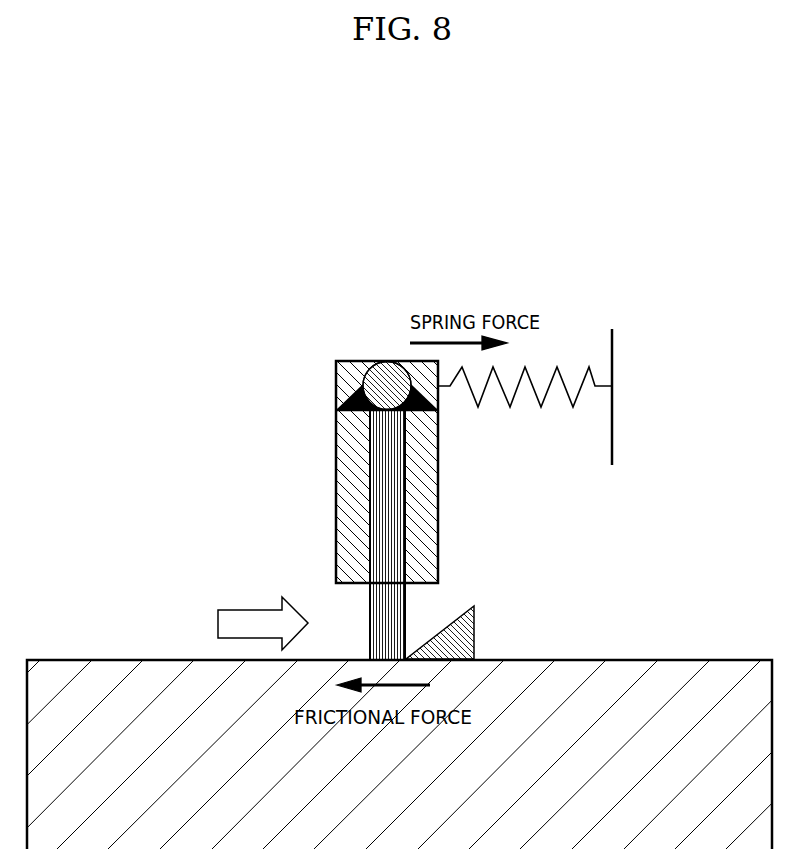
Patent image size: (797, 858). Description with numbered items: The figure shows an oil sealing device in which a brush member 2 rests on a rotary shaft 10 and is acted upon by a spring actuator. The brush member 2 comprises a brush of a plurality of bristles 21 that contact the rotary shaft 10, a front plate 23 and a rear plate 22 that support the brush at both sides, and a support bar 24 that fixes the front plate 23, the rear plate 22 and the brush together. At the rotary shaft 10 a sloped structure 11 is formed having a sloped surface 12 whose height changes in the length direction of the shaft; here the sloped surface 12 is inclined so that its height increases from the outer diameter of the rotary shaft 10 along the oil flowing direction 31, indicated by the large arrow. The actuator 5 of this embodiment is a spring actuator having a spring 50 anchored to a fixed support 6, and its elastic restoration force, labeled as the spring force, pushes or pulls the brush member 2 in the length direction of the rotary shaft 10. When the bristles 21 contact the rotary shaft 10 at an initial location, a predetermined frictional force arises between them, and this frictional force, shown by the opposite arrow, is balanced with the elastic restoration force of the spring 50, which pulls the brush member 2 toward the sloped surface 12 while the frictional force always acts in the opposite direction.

The brush member 2 is at (386, 446).
The actuator 5 is at (525, 392).
The fixed wall 6 is at (614, 342).
The rotary shaft 10 is at (688, 660).
The sloped structure 11 is at (472, 601).
The sloped surface 12 is at (455, 617).
The bristles 21 is at (375, 524).
The rear plate 22 is at (343, 470).
The front plate 23 is at (432, 470).
The support bar 24 is at (383, 370).
The oil flowing direction 31 is at (236, 603).
The spring 50 is at (545, 405).